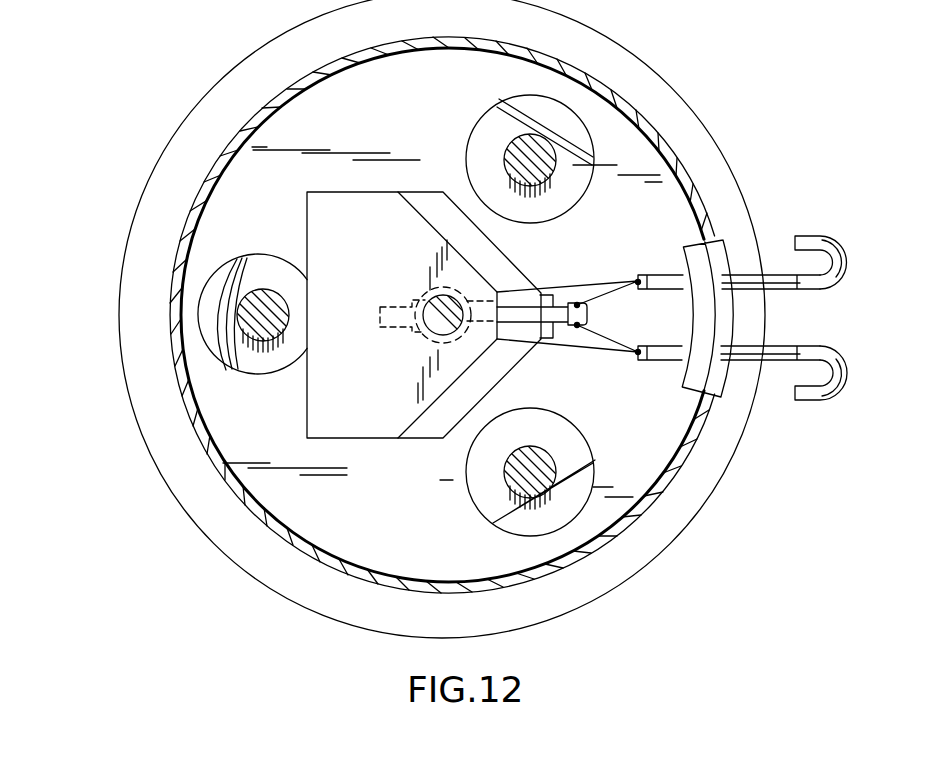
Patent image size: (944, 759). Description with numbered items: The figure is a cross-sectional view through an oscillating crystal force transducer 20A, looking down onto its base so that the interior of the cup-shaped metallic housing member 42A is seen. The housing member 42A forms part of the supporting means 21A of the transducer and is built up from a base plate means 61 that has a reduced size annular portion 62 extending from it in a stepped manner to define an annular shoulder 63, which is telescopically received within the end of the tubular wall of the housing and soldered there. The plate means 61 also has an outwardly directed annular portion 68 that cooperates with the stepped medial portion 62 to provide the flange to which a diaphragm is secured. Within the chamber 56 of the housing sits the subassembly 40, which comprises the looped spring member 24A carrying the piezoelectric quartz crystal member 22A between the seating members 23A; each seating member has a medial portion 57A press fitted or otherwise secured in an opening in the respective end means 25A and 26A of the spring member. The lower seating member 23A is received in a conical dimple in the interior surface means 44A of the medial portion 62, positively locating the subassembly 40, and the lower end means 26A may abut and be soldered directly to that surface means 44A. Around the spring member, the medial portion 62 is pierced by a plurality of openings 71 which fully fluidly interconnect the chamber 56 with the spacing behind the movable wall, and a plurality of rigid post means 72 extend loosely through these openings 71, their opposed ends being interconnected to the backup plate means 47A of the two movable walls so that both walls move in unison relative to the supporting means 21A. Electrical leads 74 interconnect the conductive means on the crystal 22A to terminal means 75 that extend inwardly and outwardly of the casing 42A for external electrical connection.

The oscillating crystal force transducer 20A is at (716, 72).
The chamber 56 is at (322, 109).
The interior surface means 44A is at (240, 160).
The looped spring member 24A is at (307, 212).
The piezoelectric quartz crystal member 22A is at (514, 293).
The electrical leads 74 is at (598, 290).
The terminal means 75 is at (660, 292).
The seating members 23A is at (428, 302).
The medial portion 57A is at (432, 334).
The end means 26A is at (497, 366).
The subassembly 40 is at (307, 415).
The end means 25A is at (470, 365).
The openings 71 is at (203, 308).
The rigid post means 72 is at (262, 289).
The backup plate means 47A is at (575, 185).
The reduced size annular portion 62 is at (213, 387).
The outwardly directed annular portion 68 is at (163, 443).
The supporting means 21A is at (245, 508).
The cup-shaped metallic housing member 42A is at (323, 563).
The base plate means 61 is at (705, 472).
The annular shoulder 63 is at (660, 505).